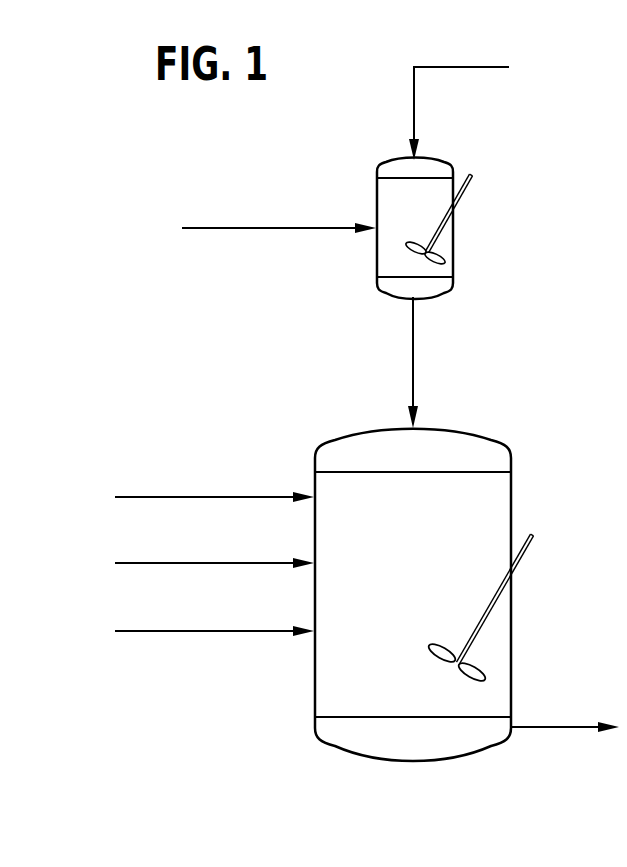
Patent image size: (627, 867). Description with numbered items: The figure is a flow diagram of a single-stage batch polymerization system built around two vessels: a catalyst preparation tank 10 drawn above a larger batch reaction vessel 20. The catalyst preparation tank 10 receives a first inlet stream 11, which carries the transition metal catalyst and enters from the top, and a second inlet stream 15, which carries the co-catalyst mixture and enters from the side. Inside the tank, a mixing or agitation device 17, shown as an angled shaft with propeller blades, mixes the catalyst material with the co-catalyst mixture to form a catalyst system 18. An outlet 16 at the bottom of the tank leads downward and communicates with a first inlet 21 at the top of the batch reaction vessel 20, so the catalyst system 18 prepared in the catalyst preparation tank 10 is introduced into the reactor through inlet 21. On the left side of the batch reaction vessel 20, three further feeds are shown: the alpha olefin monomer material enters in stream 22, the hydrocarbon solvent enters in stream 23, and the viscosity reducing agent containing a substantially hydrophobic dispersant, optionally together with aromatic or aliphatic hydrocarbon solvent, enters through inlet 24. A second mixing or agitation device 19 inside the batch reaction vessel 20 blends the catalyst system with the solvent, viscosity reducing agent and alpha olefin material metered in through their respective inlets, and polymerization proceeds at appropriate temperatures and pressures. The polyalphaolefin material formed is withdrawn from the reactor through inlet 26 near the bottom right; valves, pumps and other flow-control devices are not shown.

The catalyst preparation tank 10 is at (375, 188).
The first inlet stream 11 is at (449, 113).
The second inlet stream 15 is at (279, 216).
The outlet 16 is at (433, 346).
The mixing or agitation device 17 is at (463, 186).
The catalyst system 18 is at (412, 235).
The mixing or agitation device 19 is at (527, 551).
The batch reaction vessel 20 is at (511, 497).
The first inlet 21 is at (432, 412).
The stream 22 is at (214, 486).
The stream 23 is at (214, 552).
The inlet 24 is at (214, 620).
The inlet 26 is at (565, 716).